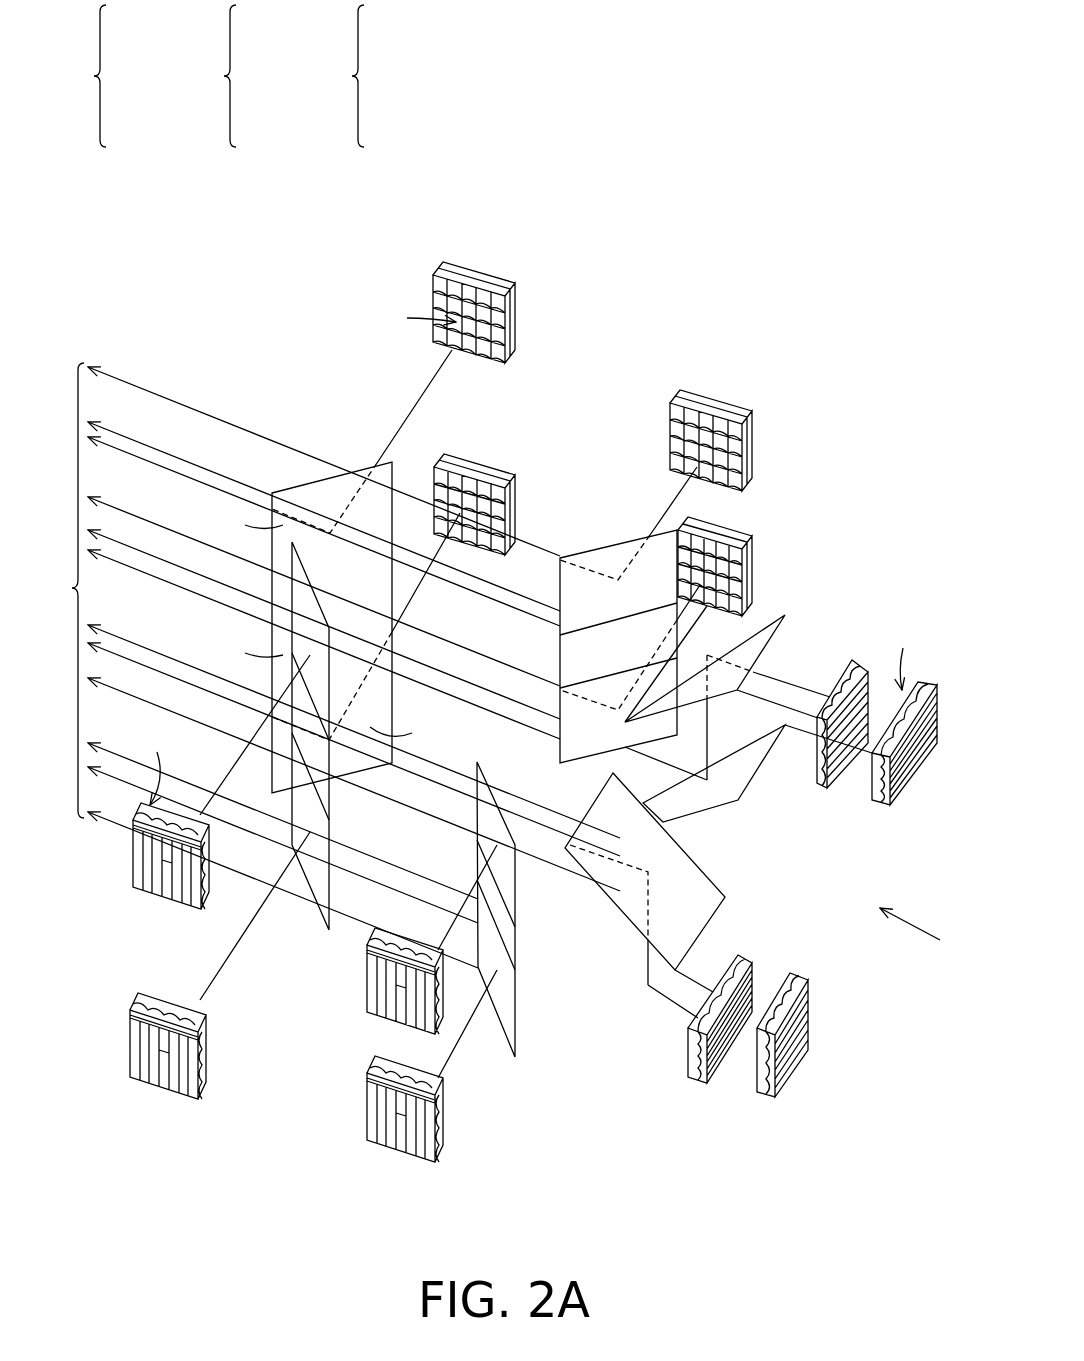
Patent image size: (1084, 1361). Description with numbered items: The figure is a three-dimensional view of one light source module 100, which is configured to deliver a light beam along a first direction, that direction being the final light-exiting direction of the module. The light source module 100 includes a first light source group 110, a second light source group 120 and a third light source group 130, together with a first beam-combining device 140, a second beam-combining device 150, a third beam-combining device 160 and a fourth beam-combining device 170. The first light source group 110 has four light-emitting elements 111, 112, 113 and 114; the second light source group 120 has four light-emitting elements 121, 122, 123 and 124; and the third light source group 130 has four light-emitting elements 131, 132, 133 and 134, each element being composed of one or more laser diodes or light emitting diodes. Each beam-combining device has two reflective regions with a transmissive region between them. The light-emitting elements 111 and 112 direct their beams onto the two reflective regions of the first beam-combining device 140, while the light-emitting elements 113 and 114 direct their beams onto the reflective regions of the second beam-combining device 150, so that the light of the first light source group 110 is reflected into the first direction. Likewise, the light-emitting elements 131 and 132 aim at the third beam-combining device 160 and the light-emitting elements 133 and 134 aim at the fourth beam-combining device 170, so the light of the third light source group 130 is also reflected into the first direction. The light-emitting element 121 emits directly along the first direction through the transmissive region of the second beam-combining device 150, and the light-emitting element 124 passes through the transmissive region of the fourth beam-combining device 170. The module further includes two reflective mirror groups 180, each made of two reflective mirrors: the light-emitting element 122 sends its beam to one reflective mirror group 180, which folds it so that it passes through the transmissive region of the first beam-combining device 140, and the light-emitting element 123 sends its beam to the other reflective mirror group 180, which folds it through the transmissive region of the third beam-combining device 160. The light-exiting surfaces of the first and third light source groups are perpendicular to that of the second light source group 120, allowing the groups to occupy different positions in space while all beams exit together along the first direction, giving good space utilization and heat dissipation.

The light source module 100 is at (802, 268).
The first light source group 110 is at (99, 75).
The light-emitting element 111 is at (133, 863).
The light-emitting element 112 is at (135, 1055).
The light-emitting element 113 is at (367, 985).
The light-emitting element 114 is at (367, 1110).
The second light source group 120 is at (229, 75).
The light-emitting element 121 is at (723, 1060).
The light-emitting element 122 is at (788, 1073).
The light-emitting element 123 is at (835, 708).
The light-emitting element 124 is at (913, 767).
The third light source group 130 is at (357, 75).
The light-emitting element 131 is at (480, 295).
The light-emitting element 132 is at (480, 487).
The light-emitting element 133 is at (716, 415).
The light-emitting element 134 is at (716, 543).
The first beam-combining device 140 is at (322, 917).
The second beam-combining device 150 is at (517, 1025).
The third beam-combining device 160 is at (313, 480).
The fourth beam-combining device 170 is at (560, 624).
The reflective mirror group 180 is at (773, 765).